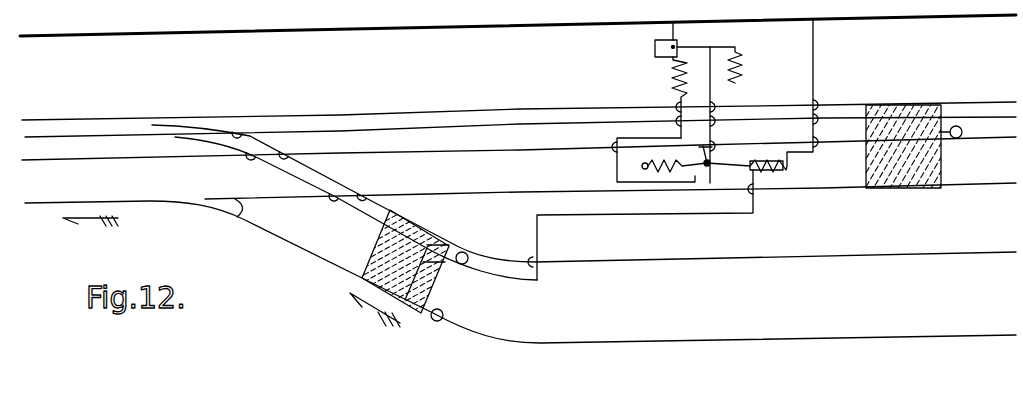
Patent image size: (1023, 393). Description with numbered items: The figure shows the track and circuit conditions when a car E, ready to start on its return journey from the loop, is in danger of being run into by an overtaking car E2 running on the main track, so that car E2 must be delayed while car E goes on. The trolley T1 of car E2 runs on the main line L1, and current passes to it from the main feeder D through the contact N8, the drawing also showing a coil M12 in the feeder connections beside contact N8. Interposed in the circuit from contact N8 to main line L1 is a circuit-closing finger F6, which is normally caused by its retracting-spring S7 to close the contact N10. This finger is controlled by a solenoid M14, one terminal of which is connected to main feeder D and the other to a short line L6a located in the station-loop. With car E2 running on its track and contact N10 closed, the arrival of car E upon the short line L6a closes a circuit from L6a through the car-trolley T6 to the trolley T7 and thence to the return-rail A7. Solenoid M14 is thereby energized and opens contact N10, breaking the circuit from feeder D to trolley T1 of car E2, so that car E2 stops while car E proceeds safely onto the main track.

The main feeder D is at (518, 20).
The contact N8 is at (698, 52).
The relay magnet M12 is at (655, 95).
The retracting-spring S7 is at (659, 160).
The circuit-closing finger F6 is at (717, 115).
The contact N10 is at (721, 175).
The solenoid M14 is at (767, 102).
The trolley T1 is at (963, 131).
The main line L1 is at (519, 159).
The overtaking car E2 is at (903, 163).
The car coming from the loop E is at (406, 262).
The car-trolley T6 is at (469, 247).
The short line L6a is at (634, 238).
The trolley T7 is at (444, 313).
The return-rail A7 is at (520, 247).